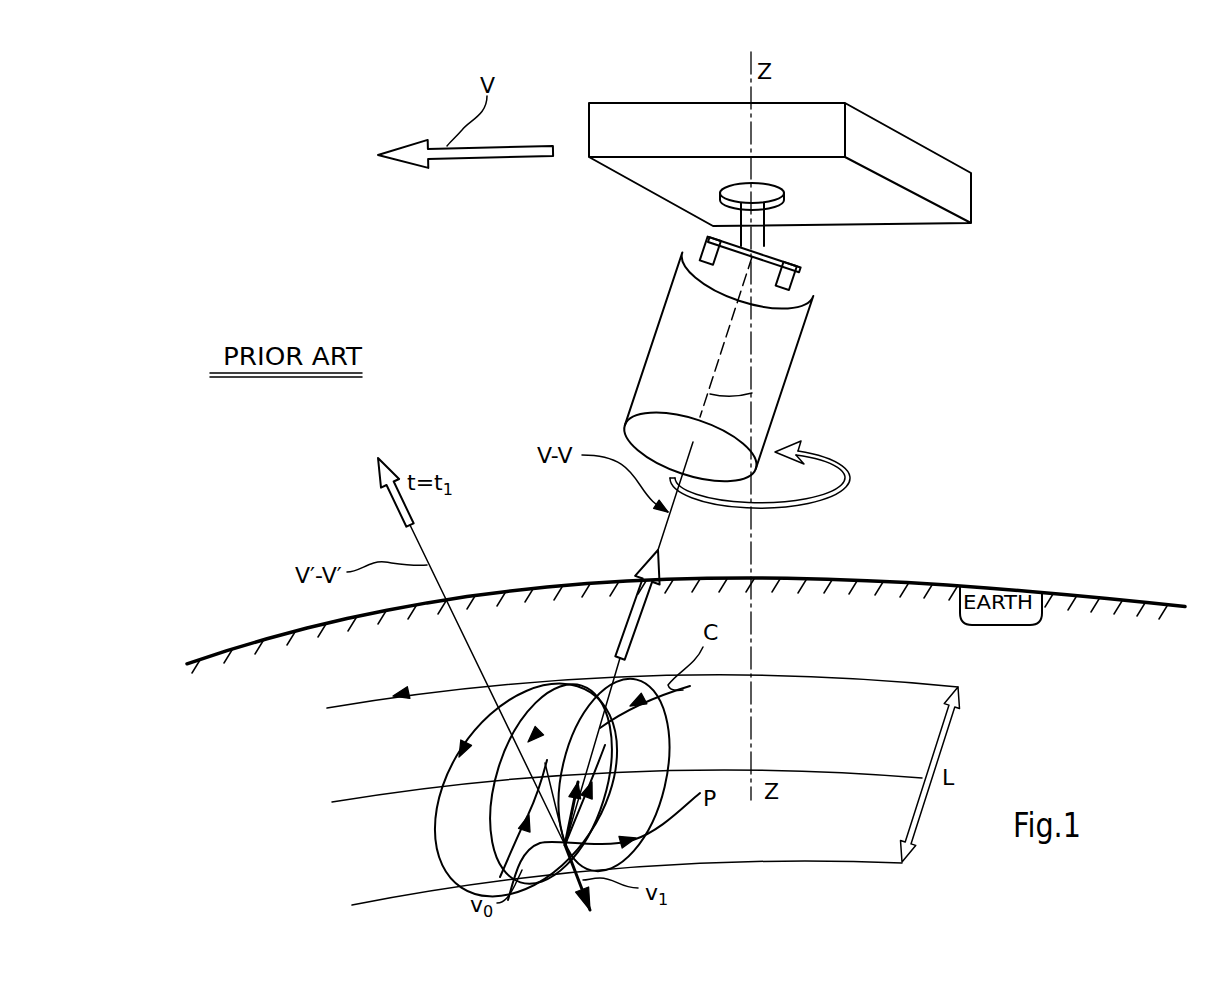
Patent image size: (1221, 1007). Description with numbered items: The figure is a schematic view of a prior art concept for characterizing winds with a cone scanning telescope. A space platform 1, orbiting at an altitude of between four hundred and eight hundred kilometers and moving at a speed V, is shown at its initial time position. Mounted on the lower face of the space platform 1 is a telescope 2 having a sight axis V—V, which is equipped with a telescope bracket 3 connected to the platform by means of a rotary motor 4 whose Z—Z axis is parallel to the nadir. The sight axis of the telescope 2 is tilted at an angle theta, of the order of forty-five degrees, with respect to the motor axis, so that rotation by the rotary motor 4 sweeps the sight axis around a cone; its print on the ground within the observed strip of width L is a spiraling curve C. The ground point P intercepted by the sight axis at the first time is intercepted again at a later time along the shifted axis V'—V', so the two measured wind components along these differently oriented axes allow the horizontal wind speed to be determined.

The space platform 1 is at (885, 150).
The telescope 2 is at (670, 354).
The telescope bracket 3 is at (708, 244).
The rotary motor 4 is at (773, 240).